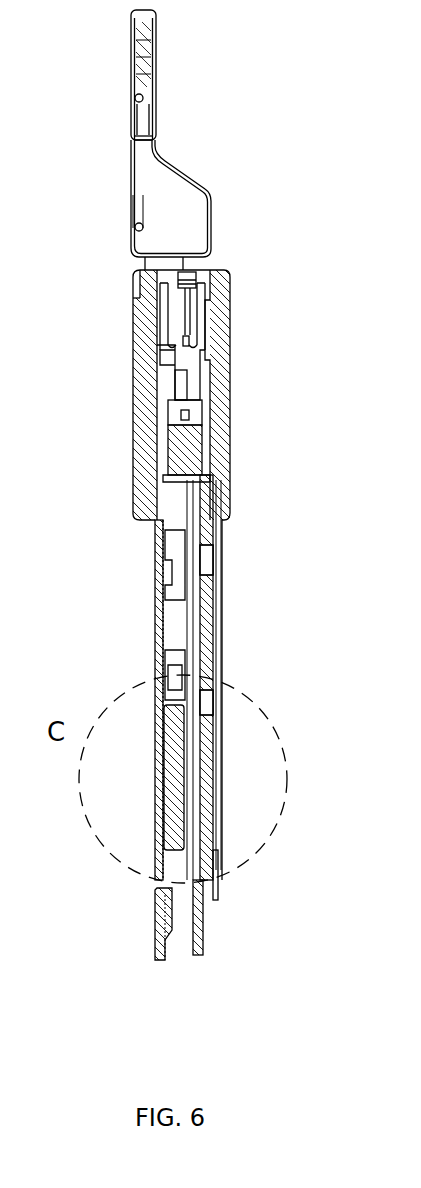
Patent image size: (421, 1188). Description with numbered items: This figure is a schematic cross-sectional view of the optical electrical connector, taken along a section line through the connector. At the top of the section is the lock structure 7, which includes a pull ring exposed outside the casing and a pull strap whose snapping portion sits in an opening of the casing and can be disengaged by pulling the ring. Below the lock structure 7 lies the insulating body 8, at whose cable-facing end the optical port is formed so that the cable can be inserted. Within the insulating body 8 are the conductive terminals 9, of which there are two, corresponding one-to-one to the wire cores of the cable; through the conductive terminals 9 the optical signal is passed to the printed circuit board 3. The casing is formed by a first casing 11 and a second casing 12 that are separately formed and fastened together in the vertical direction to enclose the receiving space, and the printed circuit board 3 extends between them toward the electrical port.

The lock structure 7 is at (133, 110).
The insulating body 8 is at (212, 322).
The conductive terminal 9 is at (185, 342).
The first casing 11 is at (155, 930).
The printed circuit board 3 is at (203, 937).
The second casing 12 is at (218, 890).